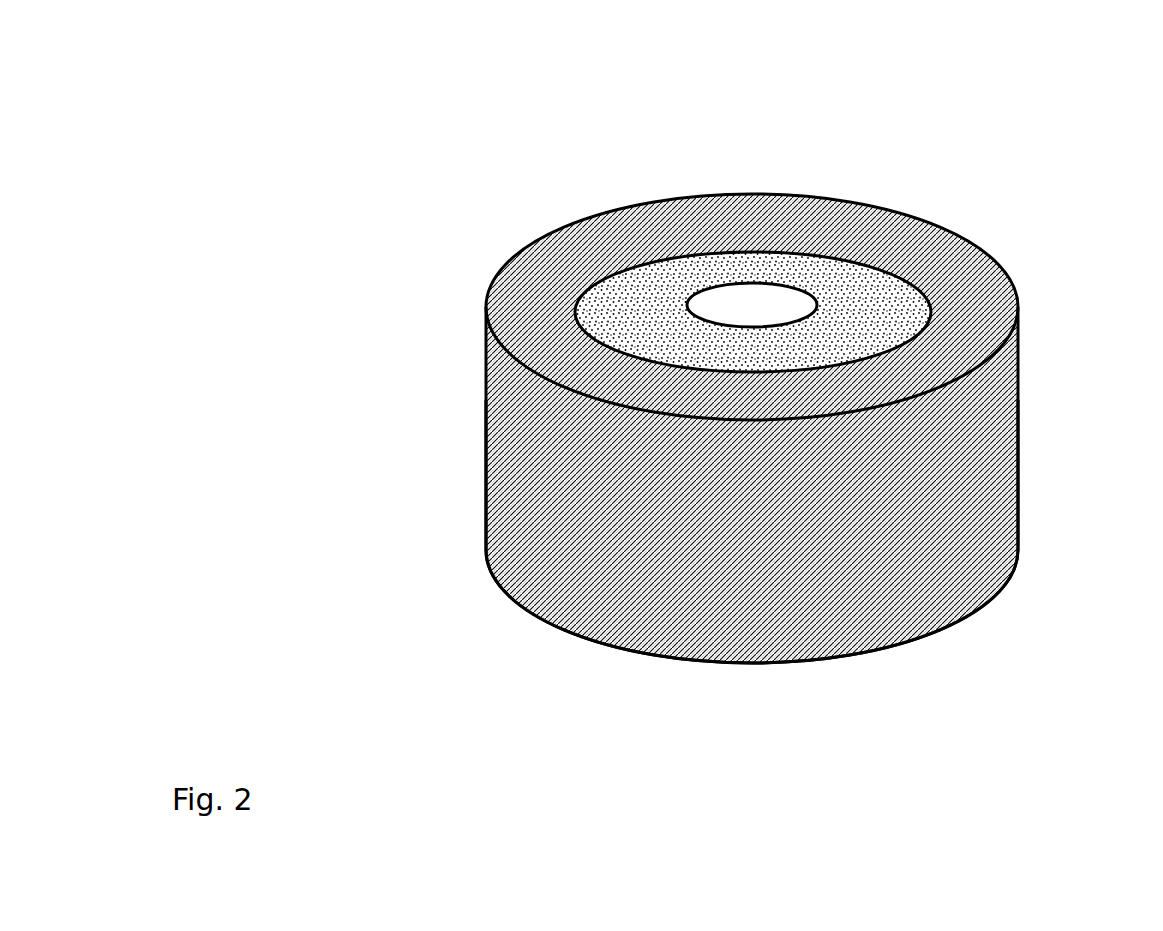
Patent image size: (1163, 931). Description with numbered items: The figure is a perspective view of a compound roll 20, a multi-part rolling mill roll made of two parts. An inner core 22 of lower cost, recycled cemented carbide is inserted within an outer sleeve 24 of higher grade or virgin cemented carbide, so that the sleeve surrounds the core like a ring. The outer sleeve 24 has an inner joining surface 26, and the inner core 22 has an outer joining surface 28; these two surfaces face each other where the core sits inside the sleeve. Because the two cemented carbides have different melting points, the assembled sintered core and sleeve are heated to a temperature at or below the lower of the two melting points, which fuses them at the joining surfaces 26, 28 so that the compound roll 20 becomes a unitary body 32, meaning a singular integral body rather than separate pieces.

The compound roll 20 is at (700, 387).
The inner core 22 is at (640, 303).
The outer sleeve 24 is at (485, 402).
The inner joining surface 26 is at (930, 318).
The outer joining surface 28 is at (930, 320).
The unitary body 32 is at (638, 573).